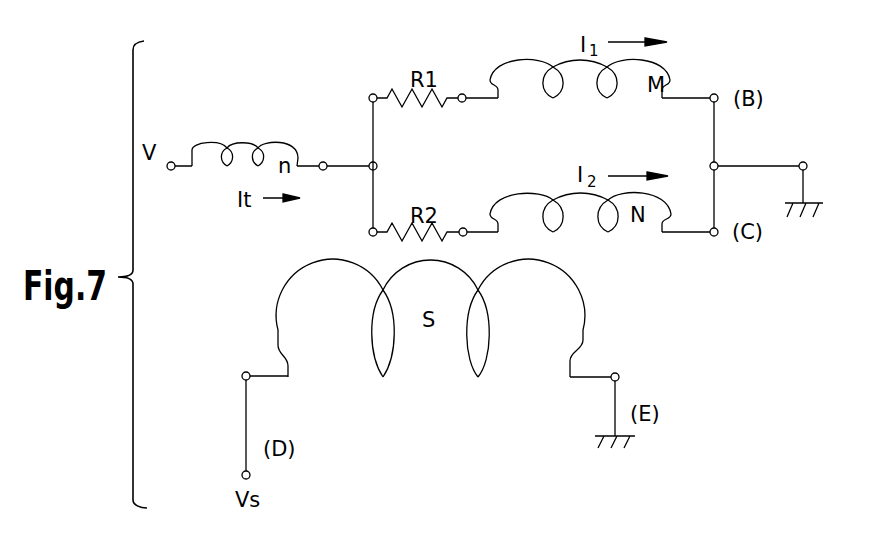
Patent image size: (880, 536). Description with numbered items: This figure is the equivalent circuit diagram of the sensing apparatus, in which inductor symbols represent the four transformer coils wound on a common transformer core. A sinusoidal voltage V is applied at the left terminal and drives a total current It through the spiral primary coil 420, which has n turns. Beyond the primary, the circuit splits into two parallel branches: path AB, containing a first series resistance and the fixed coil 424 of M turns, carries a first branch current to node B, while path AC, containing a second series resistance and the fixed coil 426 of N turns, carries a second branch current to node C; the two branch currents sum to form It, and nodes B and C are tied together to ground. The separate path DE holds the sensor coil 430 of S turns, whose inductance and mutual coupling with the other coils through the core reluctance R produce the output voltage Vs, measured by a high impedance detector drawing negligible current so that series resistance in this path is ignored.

The spiral primary coil 420 is at (210, 143).
The fixed coil 424 is at (487, 80).
The fixed coil 426 is at (653, 203).
The sensor coil 430 is at (278, 345).